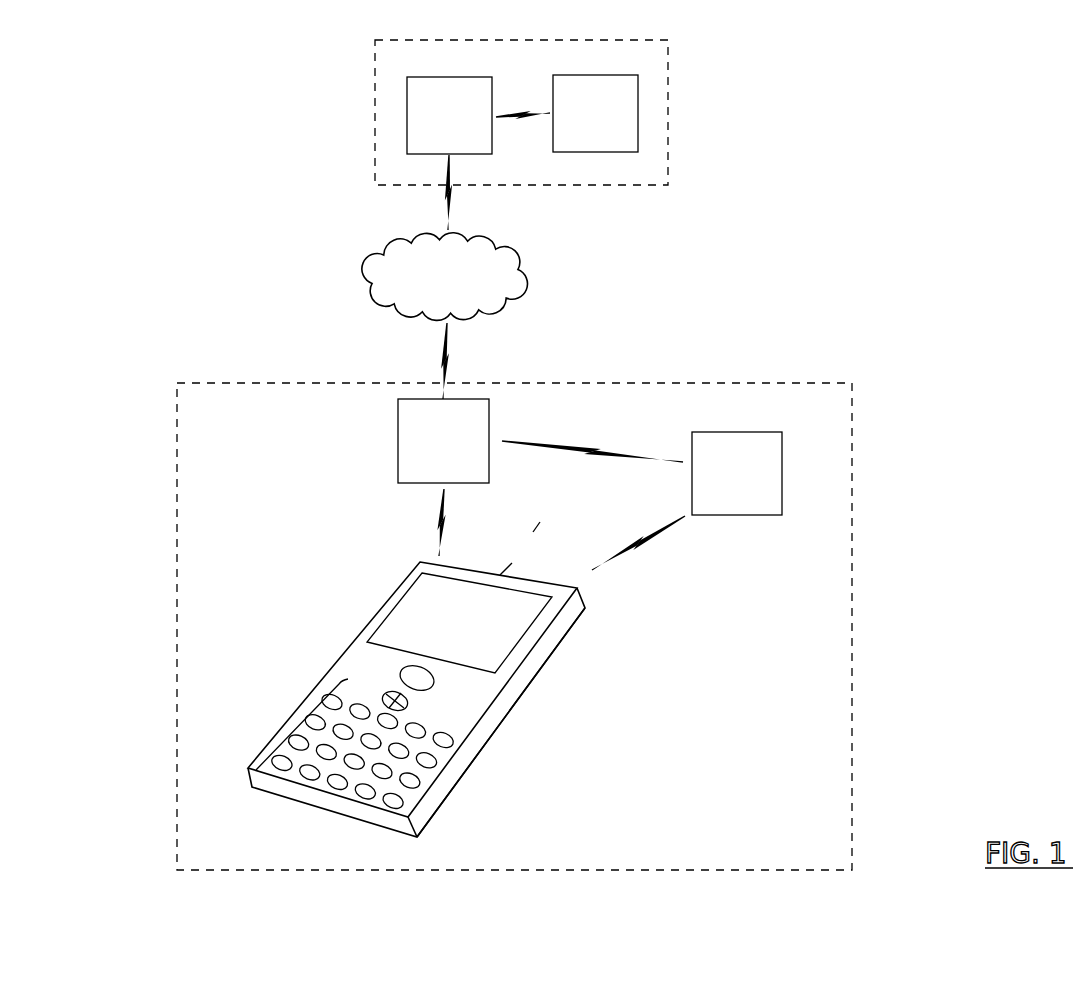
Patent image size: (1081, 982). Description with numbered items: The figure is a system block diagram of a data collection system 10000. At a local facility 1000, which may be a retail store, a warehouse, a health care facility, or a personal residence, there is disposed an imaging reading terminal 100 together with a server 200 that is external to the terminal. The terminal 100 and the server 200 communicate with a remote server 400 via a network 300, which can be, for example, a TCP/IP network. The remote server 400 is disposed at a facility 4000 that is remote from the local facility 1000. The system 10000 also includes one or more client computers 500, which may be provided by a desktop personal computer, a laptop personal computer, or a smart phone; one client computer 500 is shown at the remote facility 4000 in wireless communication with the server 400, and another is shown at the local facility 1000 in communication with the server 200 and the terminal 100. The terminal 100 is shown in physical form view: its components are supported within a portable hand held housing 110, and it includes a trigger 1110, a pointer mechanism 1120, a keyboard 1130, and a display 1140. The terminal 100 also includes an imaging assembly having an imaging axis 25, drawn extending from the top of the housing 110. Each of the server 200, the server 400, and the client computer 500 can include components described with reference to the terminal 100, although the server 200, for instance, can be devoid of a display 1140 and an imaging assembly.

The data collection system 10000 is at (767, 82).
The facility 4000 is at (661, 181).
The remote server 400 is at (449, 115).
The client computer 500 is at (667, 295).
The network 300 is at (445, 277).
The local facility 1000 is at (830, 852).
The server 200 is at (443, 441).
The imaging axis 25 is at (521, 549).
The imaging reading terminal 100 is at (591, 594).
The portable hand held housing 110 is at (480, 729).
The display 1140 is at (403, 618).
The keyboard 1130 is at (300, 716).
The trigger 1110 is at (405, 668).
The pointer mechanism 1120 is at (387, 693).